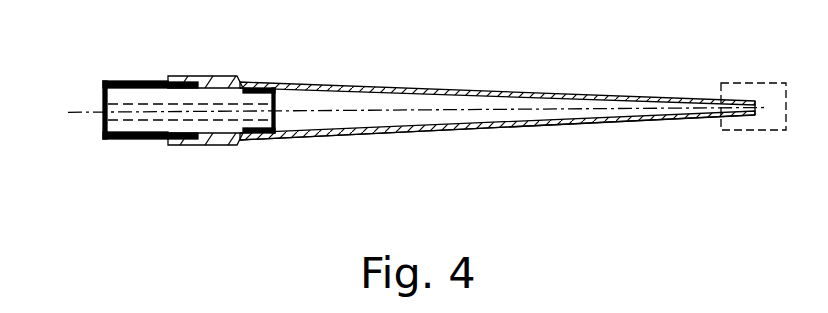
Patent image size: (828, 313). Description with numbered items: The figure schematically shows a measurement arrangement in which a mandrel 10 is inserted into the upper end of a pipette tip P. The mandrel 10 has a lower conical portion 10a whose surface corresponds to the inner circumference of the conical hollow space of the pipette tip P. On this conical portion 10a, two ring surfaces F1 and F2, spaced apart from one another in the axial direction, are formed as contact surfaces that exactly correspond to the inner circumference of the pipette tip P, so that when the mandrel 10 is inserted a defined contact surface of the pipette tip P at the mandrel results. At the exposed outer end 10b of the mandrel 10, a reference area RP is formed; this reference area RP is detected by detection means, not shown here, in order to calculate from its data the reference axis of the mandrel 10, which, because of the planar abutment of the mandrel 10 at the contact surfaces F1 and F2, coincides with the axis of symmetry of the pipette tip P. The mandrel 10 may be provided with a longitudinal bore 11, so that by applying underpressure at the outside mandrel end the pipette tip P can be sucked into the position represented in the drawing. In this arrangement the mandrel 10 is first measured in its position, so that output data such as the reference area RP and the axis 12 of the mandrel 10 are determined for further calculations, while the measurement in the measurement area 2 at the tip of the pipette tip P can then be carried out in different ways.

The measurement area 2 is at (752, 83).
The mandrel 10 is at (394, 116).
The lower conical portion 10a is at (222, 128).
The exposed outer end 10b is at (140, 95).
The longitudinal bore 11 is at (111, 104).
The axis 12 is at (283, 106).
The ring surface F1 is at (187, 83).
The ring surface F2 is at (260, 83).
The reference area RP is at (121, 140).
The pipette tip P is at (440, 150).